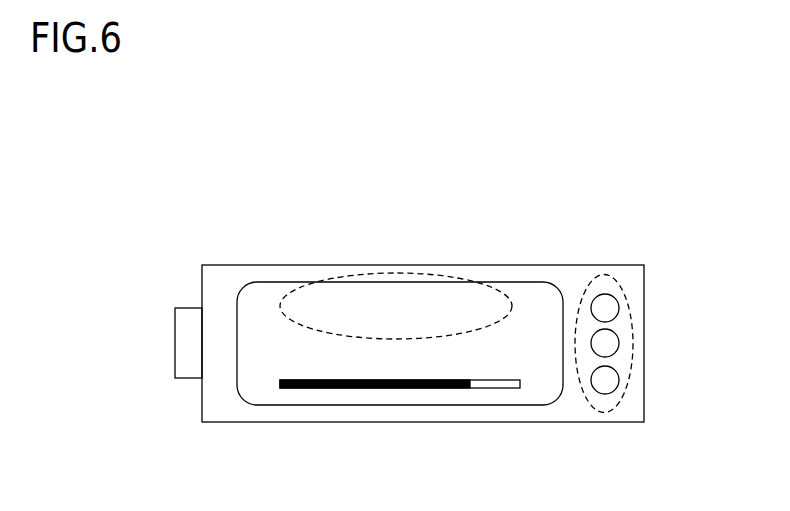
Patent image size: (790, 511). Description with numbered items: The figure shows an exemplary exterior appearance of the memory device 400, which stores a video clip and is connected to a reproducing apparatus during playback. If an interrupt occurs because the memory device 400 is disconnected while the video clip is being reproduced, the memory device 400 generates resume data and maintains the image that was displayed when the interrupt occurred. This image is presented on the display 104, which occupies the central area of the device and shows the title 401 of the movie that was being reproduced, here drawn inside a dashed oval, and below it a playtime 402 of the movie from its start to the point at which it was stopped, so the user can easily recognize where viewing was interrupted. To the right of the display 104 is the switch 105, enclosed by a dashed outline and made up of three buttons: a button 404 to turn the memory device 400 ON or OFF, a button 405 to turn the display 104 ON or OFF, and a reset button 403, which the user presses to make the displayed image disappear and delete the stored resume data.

The memory device 400 is at (617, 263).
The display 104 is at (243, 290).
The title 401 is at (395, 274).
The playtime 402 is at (390, 390).
The switch 105 is at (593, 278).
The button 404 is at (608, 308).
The button 405 is at (610, 343).
The reset button 403 is at (608, 378).